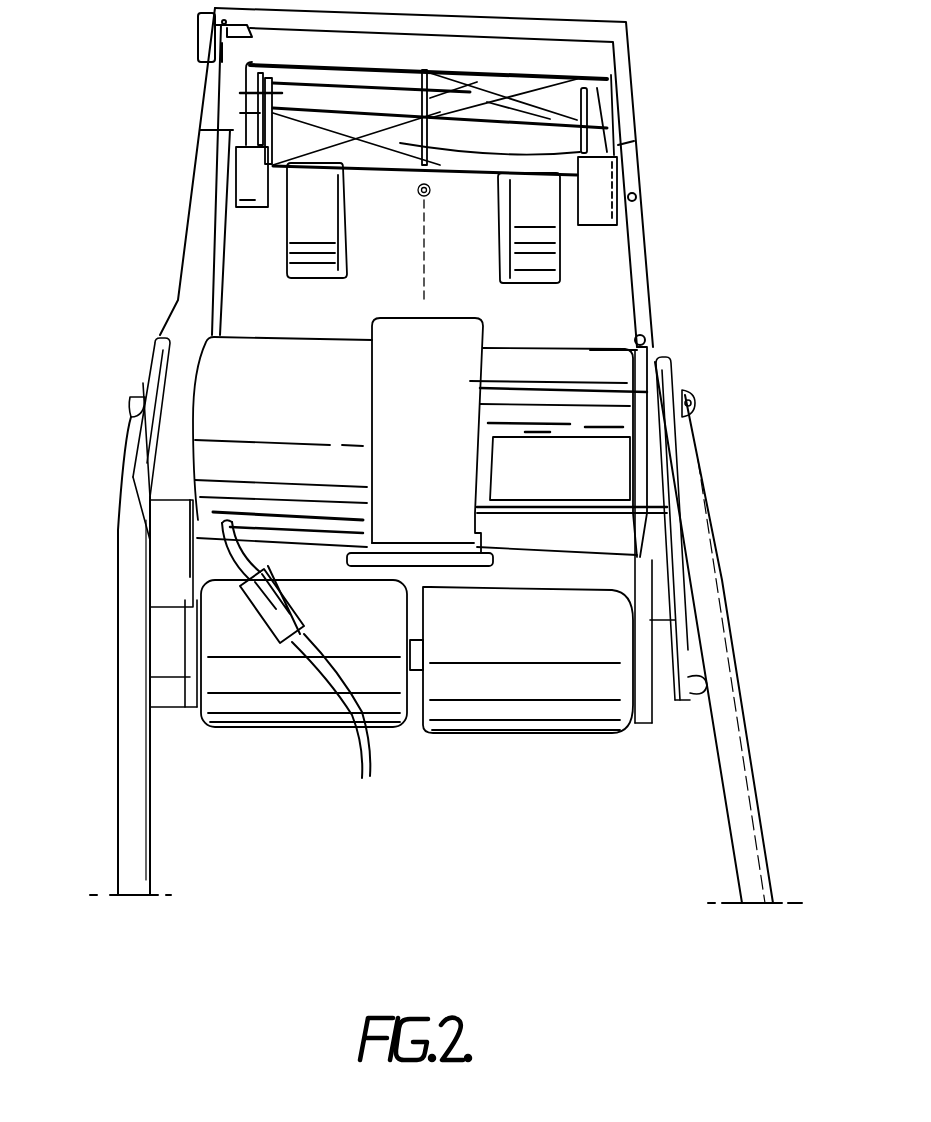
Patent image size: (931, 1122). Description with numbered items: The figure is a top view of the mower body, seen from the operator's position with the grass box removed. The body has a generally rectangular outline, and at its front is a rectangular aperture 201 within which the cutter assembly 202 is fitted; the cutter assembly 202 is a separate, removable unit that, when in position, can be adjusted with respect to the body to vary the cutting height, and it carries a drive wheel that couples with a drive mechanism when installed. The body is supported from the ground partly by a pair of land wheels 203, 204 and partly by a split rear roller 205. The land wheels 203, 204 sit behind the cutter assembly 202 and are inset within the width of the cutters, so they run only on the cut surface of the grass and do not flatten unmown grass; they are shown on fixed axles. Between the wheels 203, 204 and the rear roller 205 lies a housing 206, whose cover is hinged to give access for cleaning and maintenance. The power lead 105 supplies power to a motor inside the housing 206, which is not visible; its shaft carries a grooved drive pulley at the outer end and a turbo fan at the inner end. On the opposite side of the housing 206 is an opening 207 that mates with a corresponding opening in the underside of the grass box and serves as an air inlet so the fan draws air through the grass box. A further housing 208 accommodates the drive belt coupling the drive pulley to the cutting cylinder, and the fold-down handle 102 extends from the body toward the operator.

The fold-down handle 102 is at (135, 773).
The electric lead 105 is at (307, 670).
The rectangular aperture 201 is at (244, 56).
The cutter assembly 202 is at (248, 97).
The land wheel 203 is at (312, 210).
The land wheel 204 is at (533, 245).
The split rear roller 205 is at (583, 627).
The housing 206 is at (260, 302).
The opening 207 is at (590, 460).
The further housing 208 is at (245, 183).